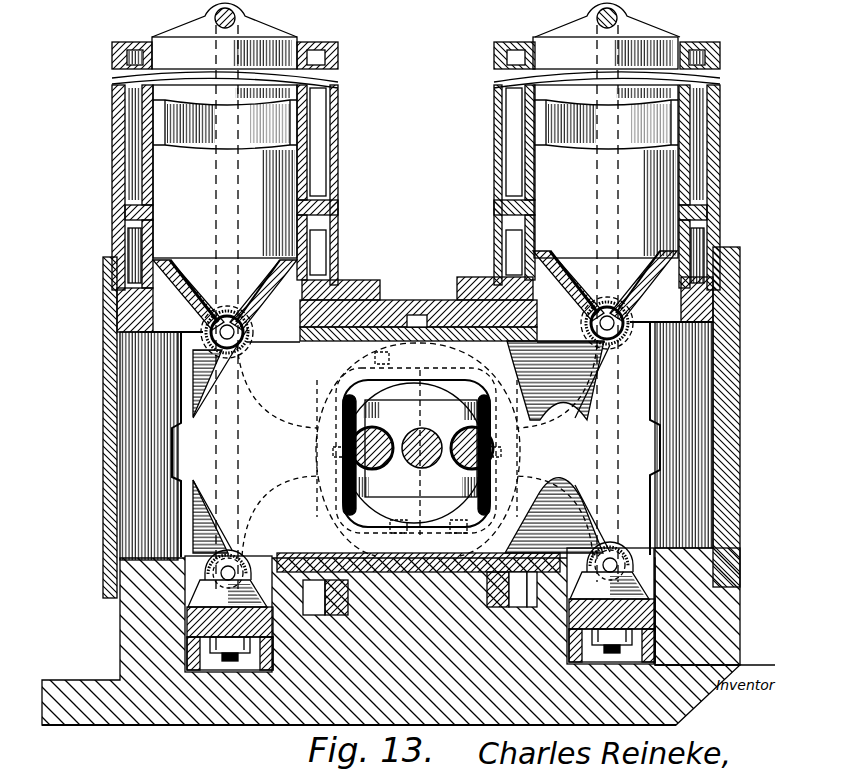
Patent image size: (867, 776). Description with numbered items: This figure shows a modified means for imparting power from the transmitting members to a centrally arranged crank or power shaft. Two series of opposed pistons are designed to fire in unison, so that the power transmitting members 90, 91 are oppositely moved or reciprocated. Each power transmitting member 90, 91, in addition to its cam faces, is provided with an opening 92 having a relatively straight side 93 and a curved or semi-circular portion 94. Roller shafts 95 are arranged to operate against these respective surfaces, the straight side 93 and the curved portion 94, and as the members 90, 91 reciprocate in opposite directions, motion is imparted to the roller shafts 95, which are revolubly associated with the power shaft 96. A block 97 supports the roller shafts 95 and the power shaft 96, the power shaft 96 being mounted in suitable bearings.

The power transmitting member 90 is at (395, 440).
The power transmitting member 91 is at (580, 380).
The opening 92 is at (363, 533).
The straight side 93 is at (345, 415).
The curved portion 94 is at (383, 377).
The roller shaft 95 is at (350, 463).
The power shaft 96 is at (422, 452).
The block 97 is at (418, 453).